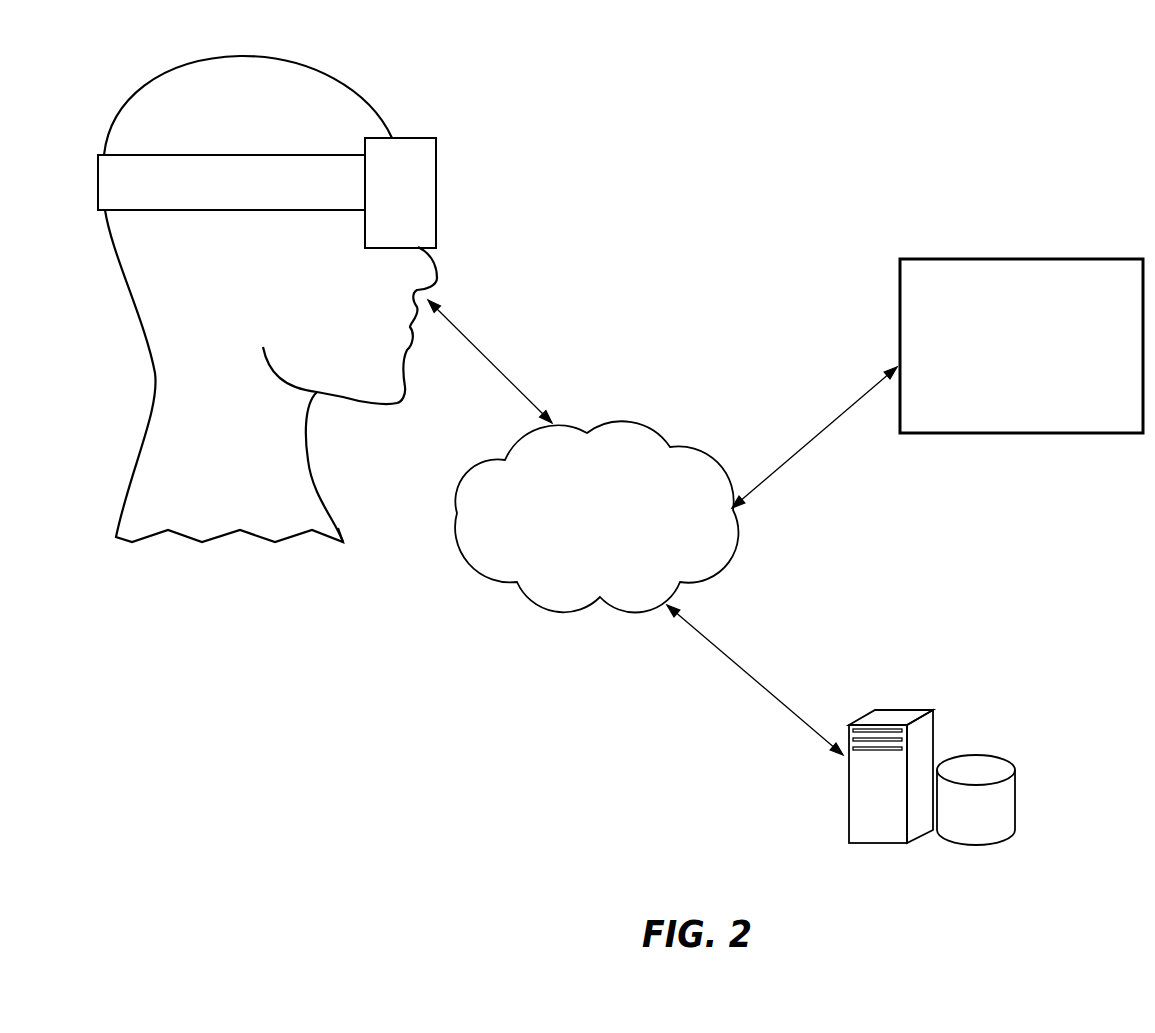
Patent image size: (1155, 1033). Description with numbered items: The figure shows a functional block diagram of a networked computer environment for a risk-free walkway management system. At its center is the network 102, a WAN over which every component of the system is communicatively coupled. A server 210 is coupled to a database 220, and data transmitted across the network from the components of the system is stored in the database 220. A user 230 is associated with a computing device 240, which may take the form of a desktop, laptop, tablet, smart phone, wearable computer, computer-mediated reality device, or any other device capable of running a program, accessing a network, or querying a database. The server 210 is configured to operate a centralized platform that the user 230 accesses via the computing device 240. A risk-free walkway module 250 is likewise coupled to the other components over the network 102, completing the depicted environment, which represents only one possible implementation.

The WAN 102 is at (596, 516).
The server 210 is at (932, 710).
The database 220 is at (1003, 757).
The user 230 is at (332, 72).
The computing device 240 is at (436, 143).
The risk-free walkway module 250 is at (1021, 346).